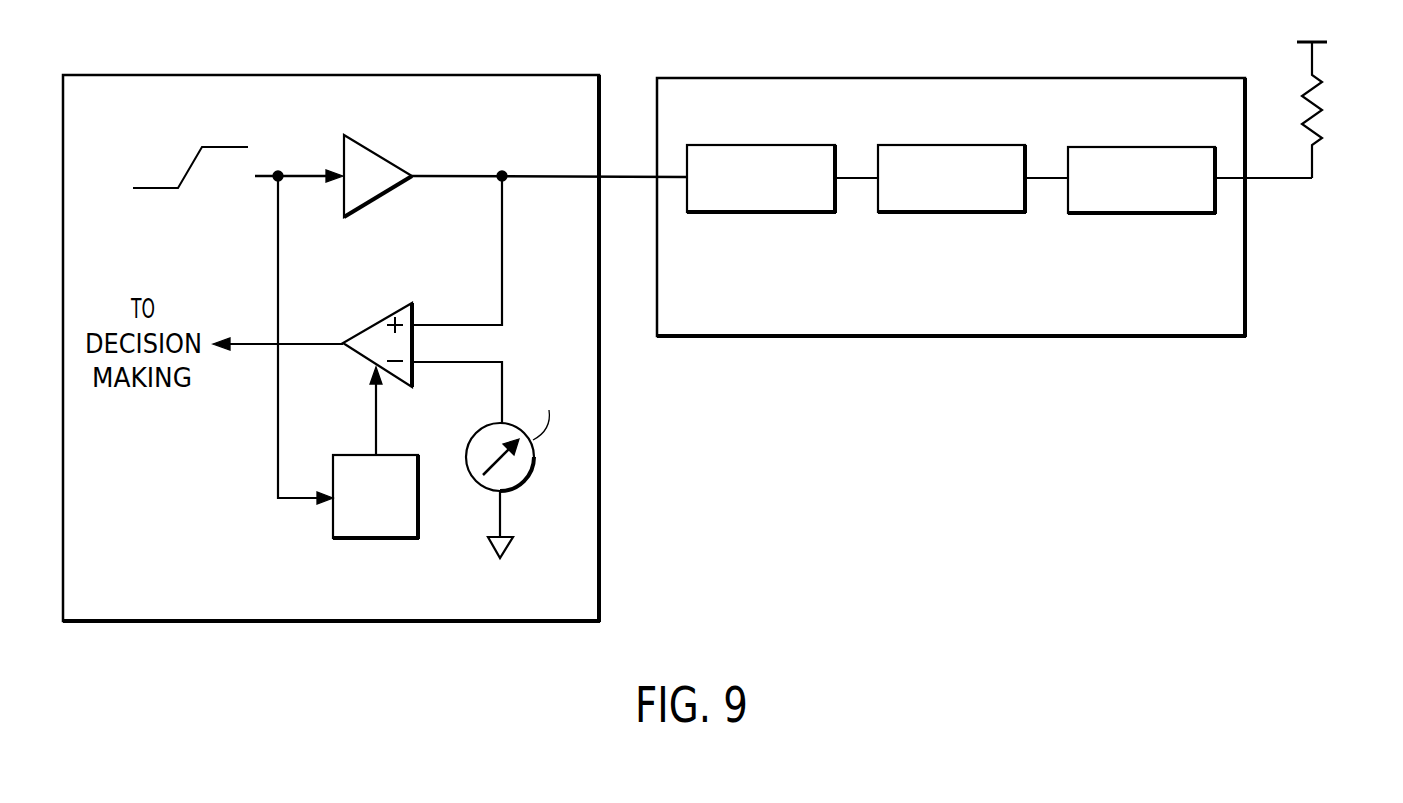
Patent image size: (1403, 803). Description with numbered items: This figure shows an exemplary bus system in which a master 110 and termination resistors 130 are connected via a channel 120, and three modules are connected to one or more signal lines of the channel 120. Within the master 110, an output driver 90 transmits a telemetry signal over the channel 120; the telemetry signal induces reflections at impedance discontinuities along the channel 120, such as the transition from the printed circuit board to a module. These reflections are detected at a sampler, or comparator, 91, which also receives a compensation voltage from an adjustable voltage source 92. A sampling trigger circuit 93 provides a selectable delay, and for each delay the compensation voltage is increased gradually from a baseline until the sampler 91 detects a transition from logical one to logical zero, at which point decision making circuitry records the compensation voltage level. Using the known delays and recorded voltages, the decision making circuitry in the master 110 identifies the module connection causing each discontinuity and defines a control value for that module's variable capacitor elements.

The output driver 90 is at (375, 146).
The sampler (comparator) 91 is at (382, 320).
The adjustable voltage source 92 is at (524, 487).
The sampling trigger circuit 93 is at (383, 541).
The master 110 is at (187, 588).
The channel 120 is at (973, 312).
The termination resistors 130 is at (1322, 96).